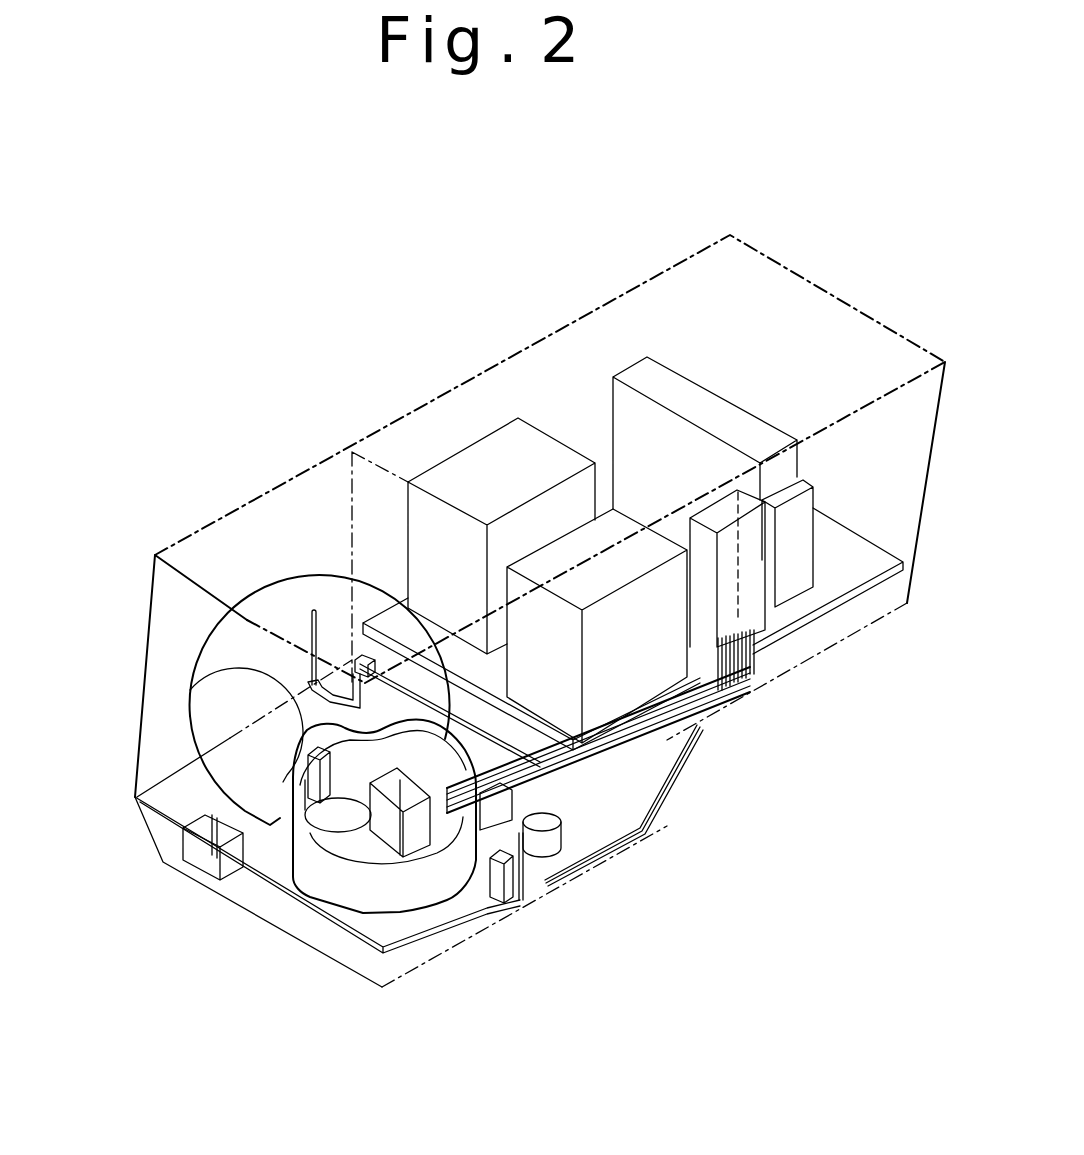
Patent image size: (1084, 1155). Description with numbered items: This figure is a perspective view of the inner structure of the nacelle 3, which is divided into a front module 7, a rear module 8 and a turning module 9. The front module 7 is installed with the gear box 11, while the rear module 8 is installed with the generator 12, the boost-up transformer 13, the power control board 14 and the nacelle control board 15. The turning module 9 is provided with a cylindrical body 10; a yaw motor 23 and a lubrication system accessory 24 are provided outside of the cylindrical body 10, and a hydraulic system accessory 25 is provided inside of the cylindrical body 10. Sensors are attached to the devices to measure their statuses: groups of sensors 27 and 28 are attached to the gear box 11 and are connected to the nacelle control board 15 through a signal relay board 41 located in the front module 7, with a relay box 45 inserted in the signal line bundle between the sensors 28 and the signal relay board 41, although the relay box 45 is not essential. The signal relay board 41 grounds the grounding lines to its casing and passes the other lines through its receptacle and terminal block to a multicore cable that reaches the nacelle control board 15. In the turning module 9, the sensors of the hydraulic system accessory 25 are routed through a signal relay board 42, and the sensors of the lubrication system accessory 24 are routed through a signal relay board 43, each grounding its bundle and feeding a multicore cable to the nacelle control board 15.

The nacelle 3 is at (127, 291).
The front module 7 is at (275, 490).
The rear module 8 is at (633, 292).
The turning module 9 is at (483, 928).
The cylindrical body 10 is at (410, 900).
The gear box 11 is at (203, 742).
The generator 12 is at (497, 437).
The boost-up transformer 13 is at (672, 722).
The power control board 14 is at (670, 378).
The nacelle control board 15 is at (740, 575).
The yaw motor 23 is at (558, 845).
The lubrication system accessory 24 is at (202, 862).
The hydraulic system accessory 25 is at (372, 700).
The group of sensors 27 is at (313, 610).
The group of sensors 28 is at (330, 683).
The signal relay board 41 is at (540, 812).
The signal relay board 42 is at (318, 867).
The signal relay board 43 is at (530, 897).
The relay box 45 is at (345, 686).